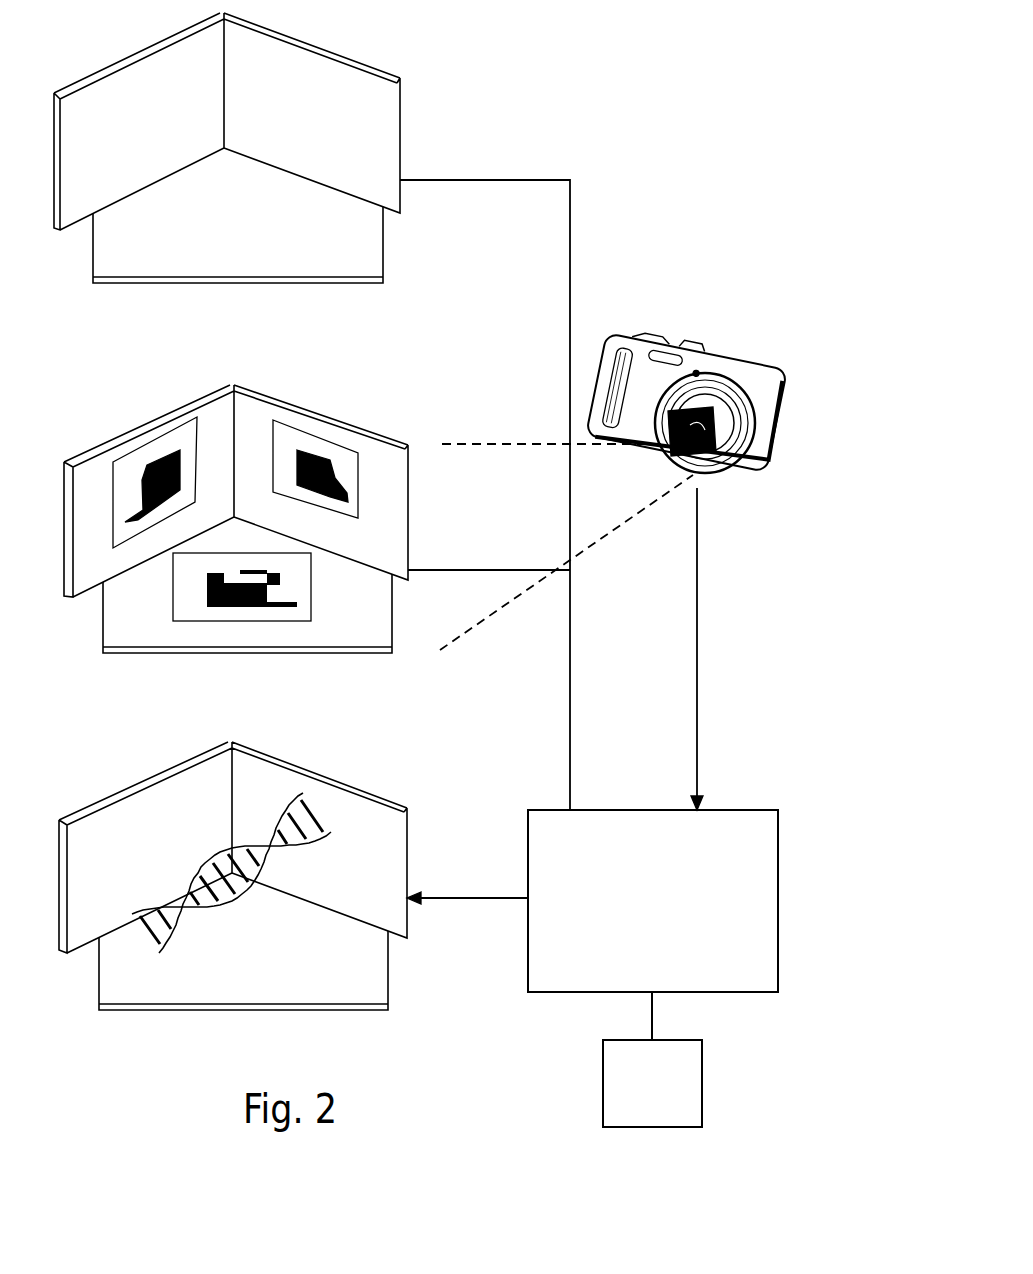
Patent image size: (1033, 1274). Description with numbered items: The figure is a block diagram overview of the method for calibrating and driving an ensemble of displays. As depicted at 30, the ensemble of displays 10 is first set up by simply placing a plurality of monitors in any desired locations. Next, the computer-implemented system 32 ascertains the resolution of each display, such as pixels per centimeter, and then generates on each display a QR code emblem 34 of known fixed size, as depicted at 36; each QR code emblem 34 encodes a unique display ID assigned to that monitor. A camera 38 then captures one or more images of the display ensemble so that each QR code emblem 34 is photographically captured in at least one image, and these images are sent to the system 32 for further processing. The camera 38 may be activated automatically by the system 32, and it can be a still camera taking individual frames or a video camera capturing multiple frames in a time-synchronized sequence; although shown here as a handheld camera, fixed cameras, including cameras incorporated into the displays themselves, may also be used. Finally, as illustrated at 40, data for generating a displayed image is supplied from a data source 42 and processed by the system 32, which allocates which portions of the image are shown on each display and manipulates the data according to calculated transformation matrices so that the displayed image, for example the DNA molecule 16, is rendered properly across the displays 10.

The displays 10 is at (137, 70).
The display ensemble setup step 30 is at (309, 145).
The QR code emblem 34 is at (158, 457).
The QR code generation step 36 is at (278, 488).
The camera 38 is at (750, 363).
The image rendering step 40 is at (222, 875).
The DNA molecule 16 is at (272, 903).
The computer-implemented system 32 is at (773, 835).
The data source 42 is at (692, 1055).